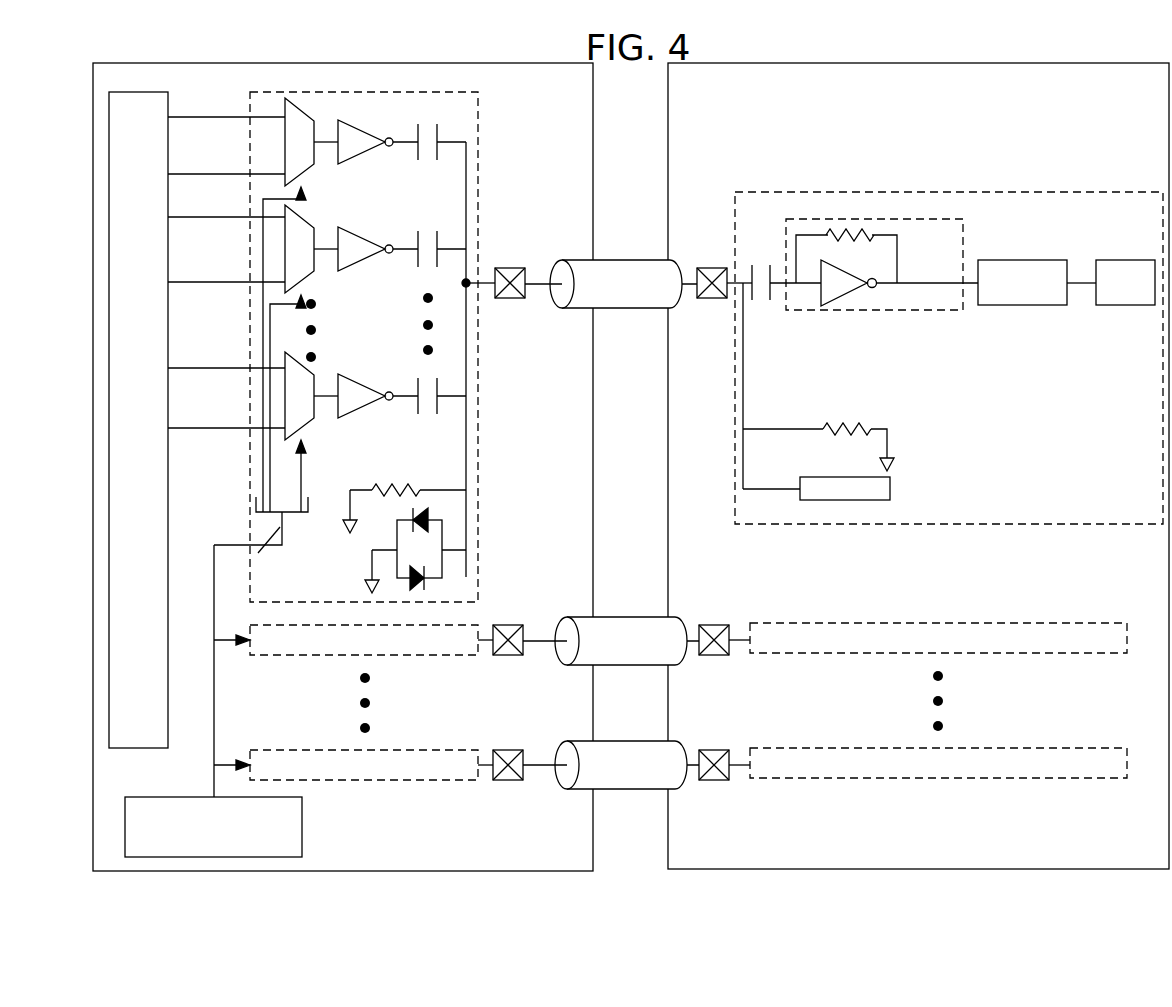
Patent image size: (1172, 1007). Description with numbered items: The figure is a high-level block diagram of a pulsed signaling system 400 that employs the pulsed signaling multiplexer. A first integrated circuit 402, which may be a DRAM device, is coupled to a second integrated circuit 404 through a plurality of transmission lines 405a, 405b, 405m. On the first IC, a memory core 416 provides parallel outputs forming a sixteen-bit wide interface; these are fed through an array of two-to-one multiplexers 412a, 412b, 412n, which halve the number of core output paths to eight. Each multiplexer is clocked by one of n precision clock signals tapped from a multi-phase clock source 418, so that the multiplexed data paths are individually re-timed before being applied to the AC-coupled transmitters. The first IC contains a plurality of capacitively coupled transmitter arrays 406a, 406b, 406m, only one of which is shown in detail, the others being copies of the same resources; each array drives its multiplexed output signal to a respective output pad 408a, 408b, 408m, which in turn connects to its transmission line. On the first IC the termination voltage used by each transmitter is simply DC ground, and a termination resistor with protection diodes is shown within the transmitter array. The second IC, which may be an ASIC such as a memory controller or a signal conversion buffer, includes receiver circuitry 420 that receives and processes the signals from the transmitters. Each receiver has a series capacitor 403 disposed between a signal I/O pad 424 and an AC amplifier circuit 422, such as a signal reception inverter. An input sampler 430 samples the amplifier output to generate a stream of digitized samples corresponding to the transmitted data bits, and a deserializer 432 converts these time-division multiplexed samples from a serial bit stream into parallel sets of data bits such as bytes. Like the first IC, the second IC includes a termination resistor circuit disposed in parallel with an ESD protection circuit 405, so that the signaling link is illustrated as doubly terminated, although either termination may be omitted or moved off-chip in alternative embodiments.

The pulsed signaling system 400 is at (797, 45).
The first integrated circuit 402 is at (343, 467).
The second integrated circuit 404 is at (918, 466).
The memory core 416 is at (197, 420).
The capacitively coupled transmitter array 406a is at (385, 347).
The capacitively coupled transmitter array 406b is at (478, 620).
The capacitively coupled transmitter array 406m is at (345, 781).
The 2:1 multiplexer 412a is at (306, 185).
The 2:1 multiplexer 412b is at (306, 290).
The 2:1 multiplexer 412n is at (306, 437).
The output pad 408a is at (510, 268).
The output pad 408b is at (518, 625).
The output pad 408m is at (495, 780).
The transmission line 405a is at (612, 308).
The transmission line 405b is at (640, 617).
The transmission line 405m is at (620, 789).
The signal I/O pad 424 is at (715, 268).
The receiver circuitry 420 is at (949, 358).
The series capacitor 403 is at (752, 300).
The AC amplifier circuit 422 is at (890, 310).
The input sampler 430 is at (1022, 260).
The deserializer 432 is at (1097, 305).
The ESD protection circuit 405 is at (890, 488).
The multi-phase clock source 418 is at (302, 825).